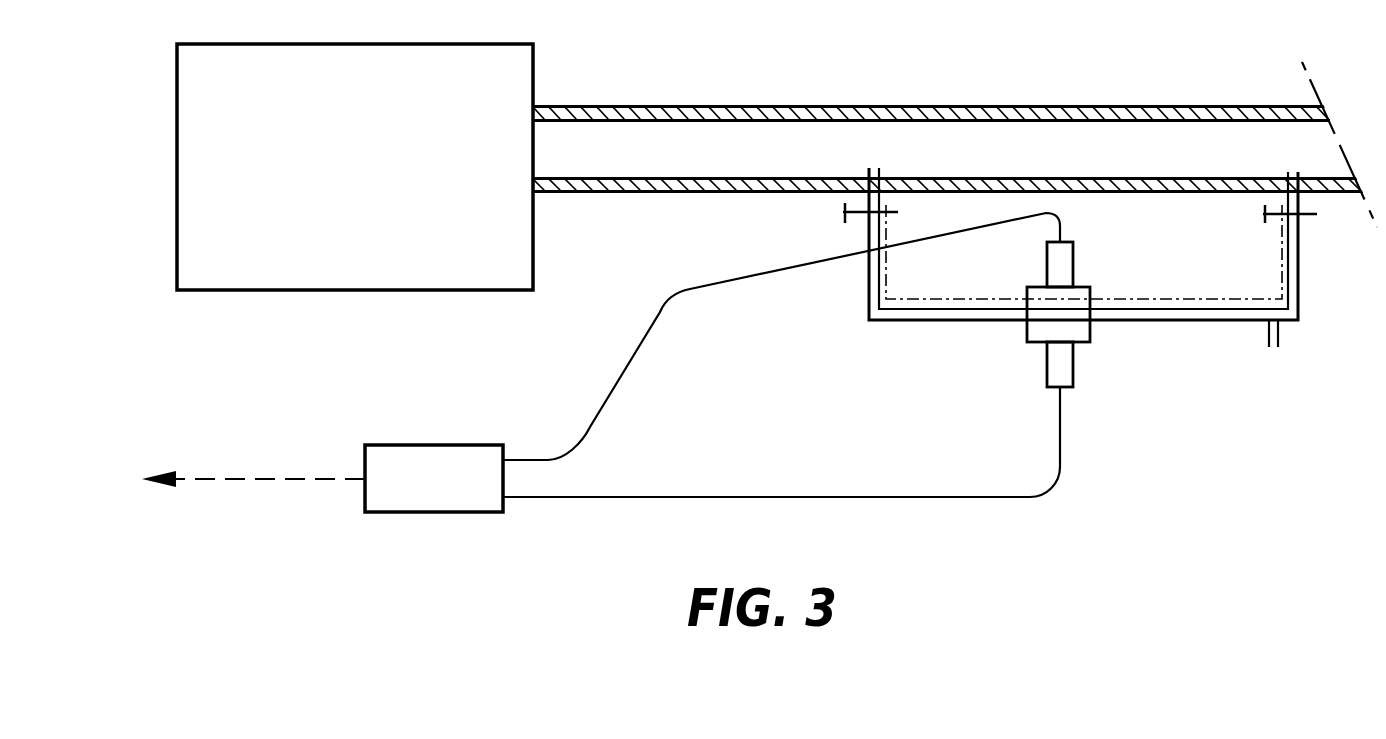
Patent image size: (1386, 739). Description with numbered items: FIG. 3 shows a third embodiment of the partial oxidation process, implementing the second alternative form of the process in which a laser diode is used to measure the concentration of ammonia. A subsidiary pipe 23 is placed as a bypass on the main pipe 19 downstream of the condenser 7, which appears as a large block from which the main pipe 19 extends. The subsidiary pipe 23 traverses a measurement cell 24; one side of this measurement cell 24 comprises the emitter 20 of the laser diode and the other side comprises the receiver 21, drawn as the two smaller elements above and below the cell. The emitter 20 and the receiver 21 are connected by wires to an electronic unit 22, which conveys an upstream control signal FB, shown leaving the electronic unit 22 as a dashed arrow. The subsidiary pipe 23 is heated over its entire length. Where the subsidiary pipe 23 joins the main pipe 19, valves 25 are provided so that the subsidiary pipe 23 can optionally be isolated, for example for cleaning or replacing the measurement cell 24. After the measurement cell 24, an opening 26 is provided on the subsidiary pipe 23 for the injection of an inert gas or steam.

The condenser 7 is at (342, 171).
The main pipe 19 is at (731, 105).
The emitter 20 is at (1077, 238).
The receiver 21 is at (1095, 346).
The electronic unit 22 is at (418, 494).
The subsidiary pipe 23 is at (866, 325).
The measurement cell 24 is at (1096, 286).
The valves 25 is at (842, 218).
The opening 26 is at (1265, 337).